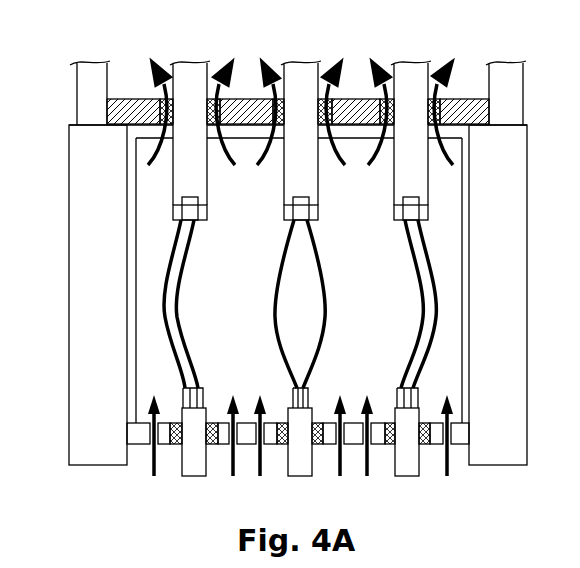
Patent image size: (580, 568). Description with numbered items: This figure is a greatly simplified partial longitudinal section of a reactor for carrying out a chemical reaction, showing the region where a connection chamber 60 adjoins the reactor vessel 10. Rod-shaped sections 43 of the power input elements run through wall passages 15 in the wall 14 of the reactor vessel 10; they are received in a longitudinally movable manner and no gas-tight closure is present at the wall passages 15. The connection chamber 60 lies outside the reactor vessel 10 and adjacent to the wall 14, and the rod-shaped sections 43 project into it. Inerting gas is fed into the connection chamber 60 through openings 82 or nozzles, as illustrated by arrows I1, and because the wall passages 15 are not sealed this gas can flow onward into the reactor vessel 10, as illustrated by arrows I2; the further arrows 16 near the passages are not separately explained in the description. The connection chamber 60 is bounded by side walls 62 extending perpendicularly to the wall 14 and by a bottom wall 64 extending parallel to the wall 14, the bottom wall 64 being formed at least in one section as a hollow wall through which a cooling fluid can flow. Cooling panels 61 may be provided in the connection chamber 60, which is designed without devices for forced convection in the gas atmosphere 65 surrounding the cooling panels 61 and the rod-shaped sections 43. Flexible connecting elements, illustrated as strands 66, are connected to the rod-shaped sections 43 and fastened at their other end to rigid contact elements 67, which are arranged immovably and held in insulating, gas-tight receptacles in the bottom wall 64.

The reactor vessel 10 is at (110, 32).
The wall 14 is at (117, 108).
The wall passages 15 is at (169, 90).
The hot air flow 16 is at (214, 82).
The rod-shaped sections 43 is at (190, 188).
The connection chamber 60 is at (97, 225).
The cooling panels 61 is at (143, 172).
The side walls 62 is at (98, 293).
The bottom wall 64 is at (132, 441).
The gas atmosphere 65 is at (135, 132).
The strands 66 is at (178, 268).
The rigid contact elements 67 is at (206, 412).
The openings 82 is at (369, 434).
The arrows I1 is at (230, 458).
The arrows I2 is at (268, 161).